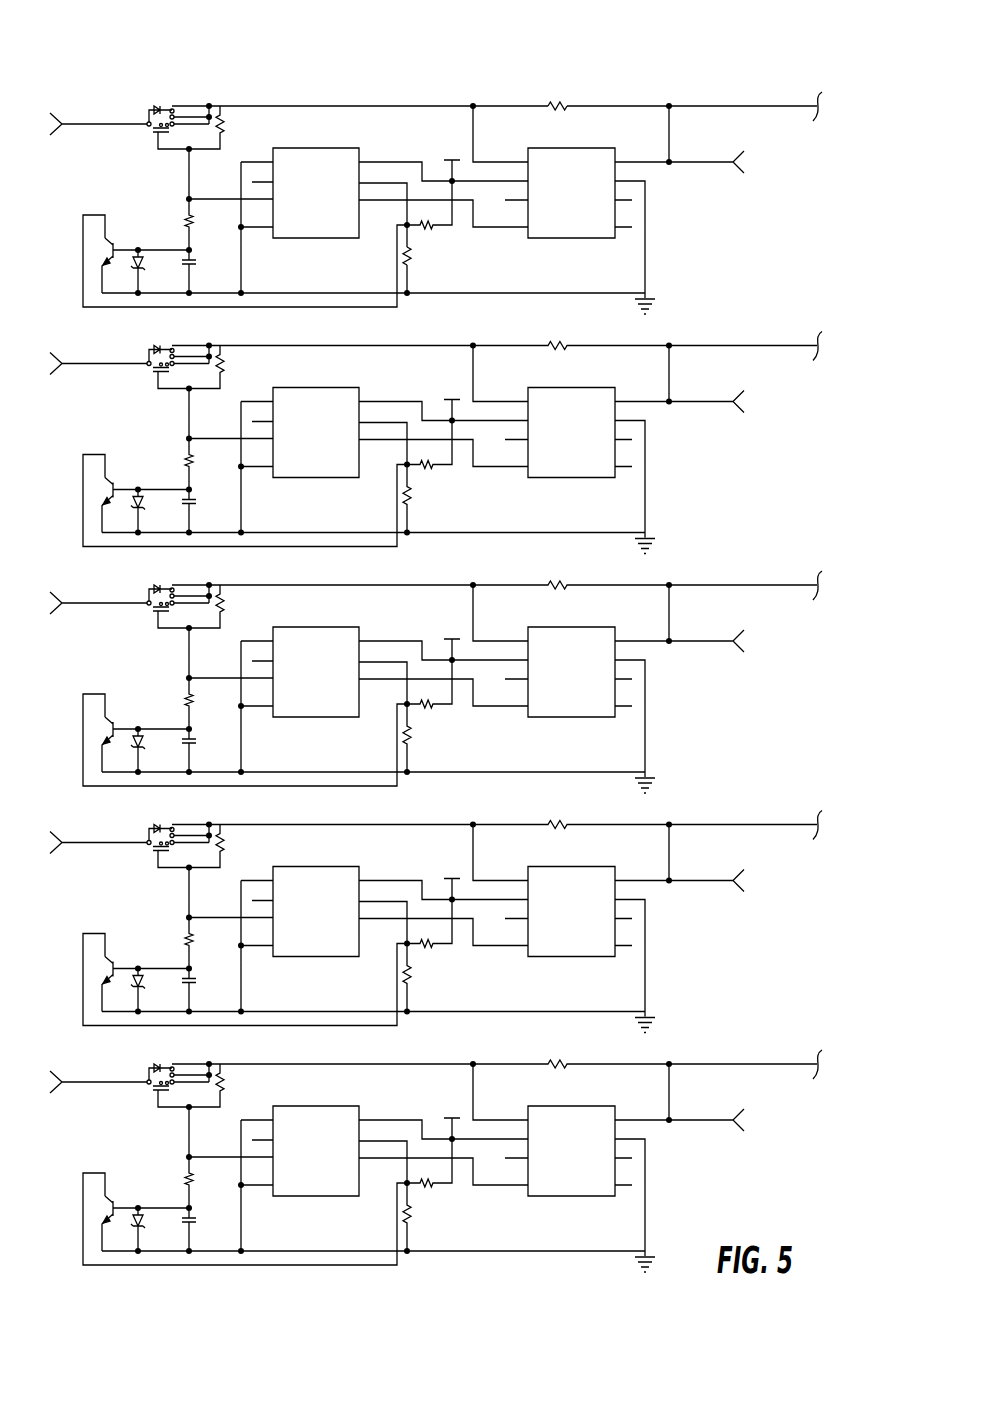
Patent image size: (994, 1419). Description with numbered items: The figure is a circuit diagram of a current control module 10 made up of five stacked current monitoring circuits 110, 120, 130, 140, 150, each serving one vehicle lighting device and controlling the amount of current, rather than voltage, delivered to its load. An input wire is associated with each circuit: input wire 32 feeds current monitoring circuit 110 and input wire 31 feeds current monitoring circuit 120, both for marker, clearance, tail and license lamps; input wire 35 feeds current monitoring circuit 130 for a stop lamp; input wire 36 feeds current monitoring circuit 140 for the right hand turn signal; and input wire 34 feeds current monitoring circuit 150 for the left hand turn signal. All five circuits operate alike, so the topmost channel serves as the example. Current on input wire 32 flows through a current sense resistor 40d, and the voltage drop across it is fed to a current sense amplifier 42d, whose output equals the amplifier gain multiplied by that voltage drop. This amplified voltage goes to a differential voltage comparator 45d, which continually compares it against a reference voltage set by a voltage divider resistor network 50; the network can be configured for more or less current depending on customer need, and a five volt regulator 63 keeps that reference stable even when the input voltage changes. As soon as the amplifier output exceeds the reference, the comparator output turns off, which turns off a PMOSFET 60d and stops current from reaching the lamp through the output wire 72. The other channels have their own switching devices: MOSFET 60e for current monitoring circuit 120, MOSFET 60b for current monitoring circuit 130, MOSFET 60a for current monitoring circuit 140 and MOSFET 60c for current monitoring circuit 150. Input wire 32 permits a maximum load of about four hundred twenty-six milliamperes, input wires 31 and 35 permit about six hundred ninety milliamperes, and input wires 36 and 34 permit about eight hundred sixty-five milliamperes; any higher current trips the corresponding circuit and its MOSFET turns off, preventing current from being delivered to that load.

The current control module 10 is at (436, 649).
The output wire 72 is at (90, 124).
The PMOSFET 60d is at (183, 105).
The MOSFET 60e is at (153, 351).
The MOSFET 60b is at (153, 590).
The MOSFET 60a is at (153, 830).
The MOSFET 60c is at (153, 1069).
The differential voltage comparator 45d is at (318, 152).
The 5V regulator 63 is at (448, 158).
The current sense resistor 40d is at (563, 104).
The current sense amplifier 42d is at (585, 207).
The voltage divider resistor network 50 is at (410, 258).
The input wire 32 is at (702, 162).
The input wire 31 is at (497, 358).
The input wire 35 is at (497, 597).
The input wire 36 is at (497, 837).
The input wire 34 is at (497, 1076).
The current monitoring circuit 110 is at (750, 162).
The current monitoring circuit 120 is at (706, 432).
The current monitoring circuit 130 is at (706, 671).
The current monitoring circuit 140 is at (706, 911).
The current monitoring circuit 150 is at (706, 1150).